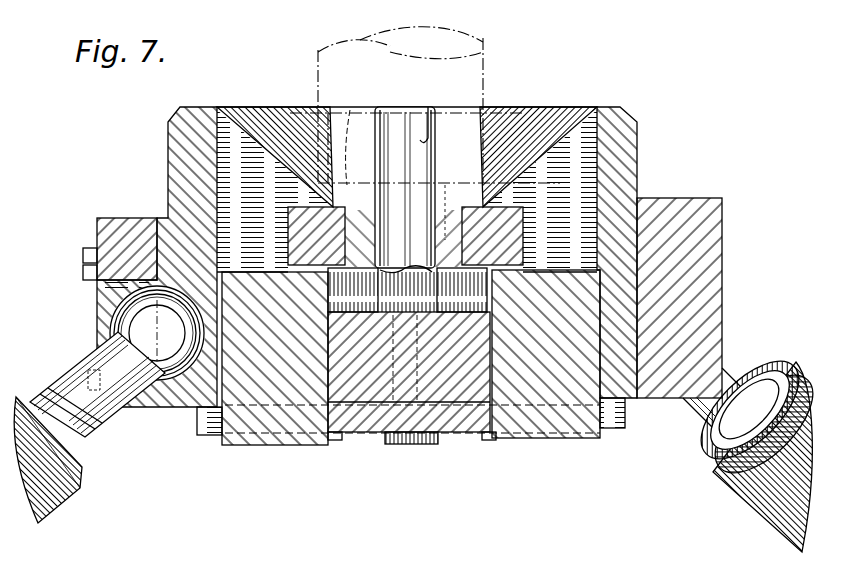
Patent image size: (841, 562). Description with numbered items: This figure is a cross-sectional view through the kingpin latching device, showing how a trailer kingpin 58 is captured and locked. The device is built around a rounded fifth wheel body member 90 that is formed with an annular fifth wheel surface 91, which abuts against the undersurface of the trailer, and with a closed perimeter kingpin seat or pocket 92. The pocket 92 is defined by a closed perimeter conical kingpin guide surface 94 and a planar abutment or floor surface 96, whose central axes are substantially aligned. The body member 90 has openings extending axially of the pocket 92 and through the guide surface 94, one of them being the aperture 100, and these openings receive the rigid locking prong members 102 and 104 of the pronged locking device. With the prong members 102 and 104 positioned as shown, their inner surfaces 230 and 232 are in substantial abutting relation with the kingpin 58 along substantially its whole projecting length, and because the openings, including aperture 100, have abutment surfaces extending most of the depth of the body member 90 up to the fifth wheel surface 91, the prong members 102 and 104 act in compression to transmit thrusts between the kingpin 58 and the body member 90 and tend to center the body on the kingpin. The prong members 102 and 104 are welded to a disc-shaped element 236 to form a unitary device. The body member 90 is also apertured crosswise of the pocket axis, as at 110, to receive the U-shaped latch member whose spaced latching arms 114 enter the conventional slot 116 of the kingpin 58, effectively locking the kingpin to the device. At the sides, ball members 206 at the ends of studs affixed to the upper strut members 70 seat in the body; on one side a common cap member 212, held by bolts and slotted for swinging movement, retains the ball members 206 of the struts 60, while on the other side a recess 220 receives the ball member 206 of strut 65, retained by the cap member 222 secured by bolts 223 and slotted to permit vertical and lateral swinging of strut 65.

The kingpin 58 is at (490, 58).
The strut 60 is at (756, 429).
The strut 65 is at (89, 428).
The upper strut member 70 is at (45, 504).
The fifth wheel body member 90 is at (628, 150).
The fifth wheel surface 91 is at (200, 107).
The kingpin seat or pocket 92 is at (442, 246).
The conical kingpin guide surface 94 is at (560, 125).
The floor surface 96 is at (364, 318).
The aperture 100 is at (425, 140).
The locking prong member 102 is at (275, 446).
The locking prong member 104 is at (405, 446).
The aperture 110 is at (305, 242).
The latching arm 114 is at (290, 216).
The slot 116 is at (352, 108).
The ball member 206 is at (132, 312).
The common cap member 212 is at (705, 251).
The recess 220 is at (170, 408).
The cap member 222 is at (127, 232).
The bolt 223 is at (88, 250).
The inner surface 230 is at (340, 442).
The inner surface 232 is at (404, 110).
The disc-shaped element 236 is at (612, 430).